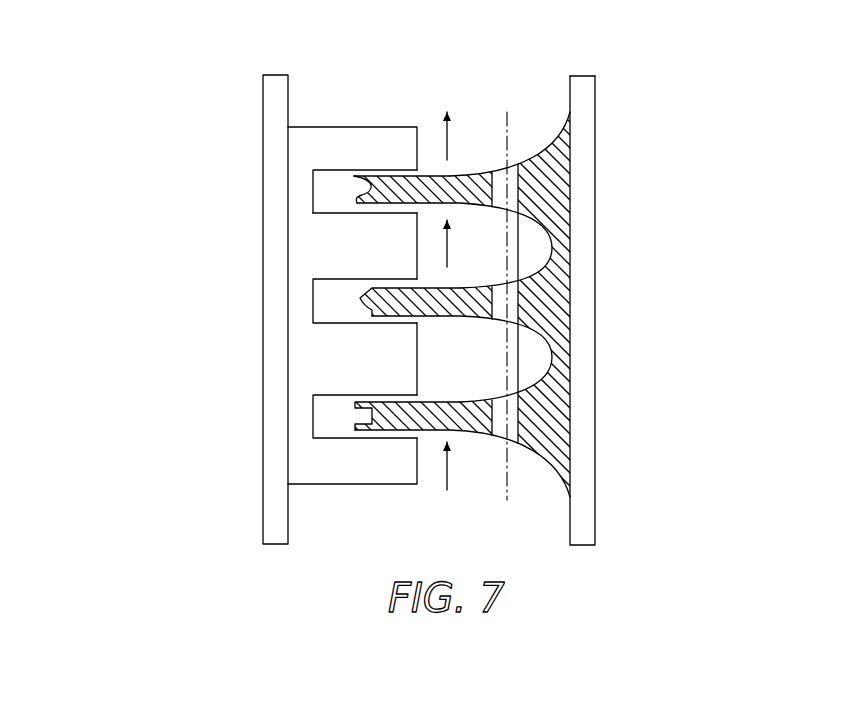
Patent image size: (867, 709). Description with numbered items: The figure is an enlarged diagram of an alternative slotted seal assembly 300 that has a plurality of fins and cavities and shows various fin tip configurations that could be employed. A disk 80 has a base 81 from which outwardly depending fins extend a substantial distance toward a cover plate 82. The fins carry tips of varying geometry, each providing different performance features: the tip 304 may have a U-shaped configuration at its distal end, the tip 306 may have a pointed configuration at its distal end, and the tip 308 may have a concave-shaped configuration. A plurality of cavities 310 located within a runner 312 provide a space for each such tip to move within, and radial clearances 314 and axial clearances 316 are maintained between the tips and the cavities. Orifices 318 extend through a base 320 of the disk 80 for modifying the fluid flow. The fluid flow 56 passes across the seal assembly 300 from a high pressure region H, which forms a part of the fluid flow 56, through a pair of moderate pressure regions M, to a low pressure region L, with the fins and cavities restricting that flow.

The seal assembly 300 is at (178, 497).
The tip 304 is at (372, 416).
The tip 306 is at (362, 298).
The tip 308 is at (356, 192).
The cavities 310 is at (322, 188).
The runner 312 is at (310, 147).
The radial clearances 314 is at (392, 172).
The axial clearances 316 is at (332, 199).
The orifices 318 is at (515, 416).
The base 320 is at (572, 298).
The fluid flow 56 is at (450, 506).
The disk 80 is at (595, 100).
The base 81 is at (582, 92).
The cover plate 82 is at (262, 525).